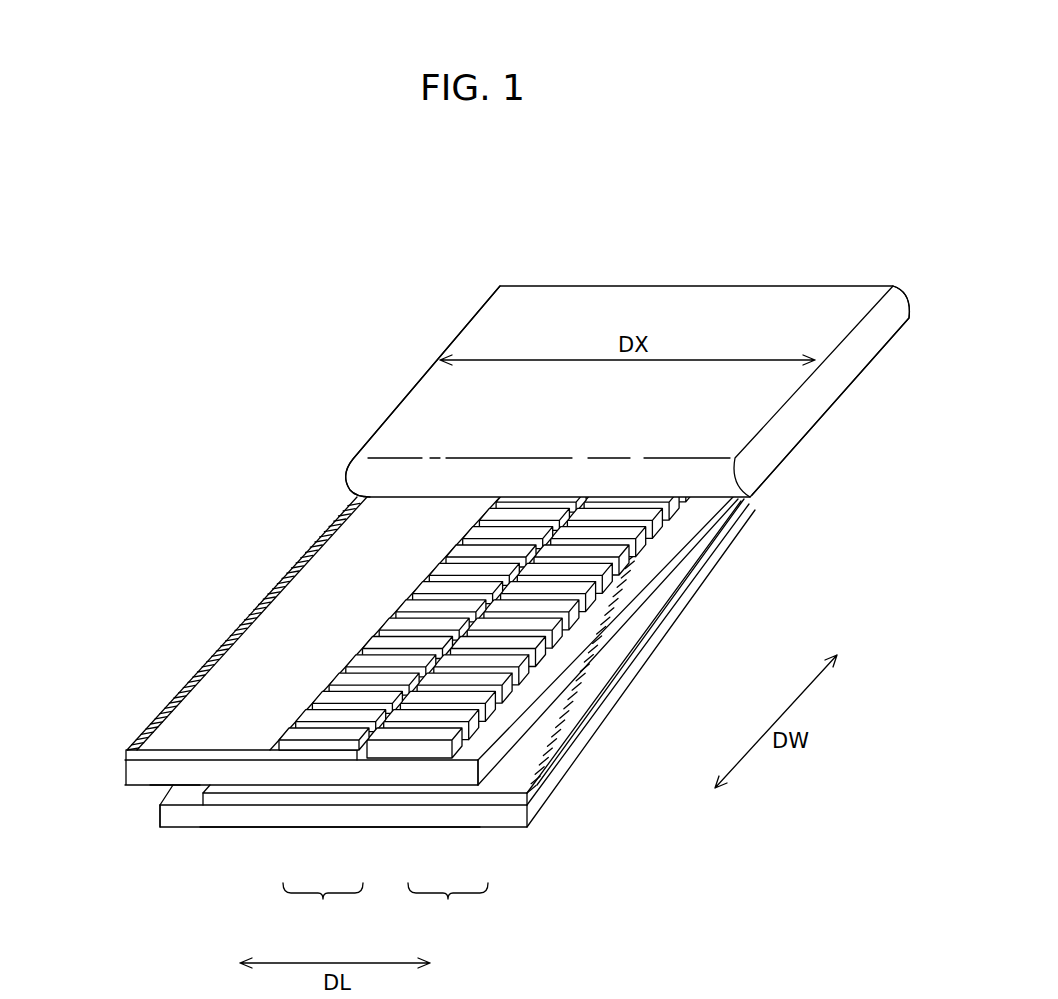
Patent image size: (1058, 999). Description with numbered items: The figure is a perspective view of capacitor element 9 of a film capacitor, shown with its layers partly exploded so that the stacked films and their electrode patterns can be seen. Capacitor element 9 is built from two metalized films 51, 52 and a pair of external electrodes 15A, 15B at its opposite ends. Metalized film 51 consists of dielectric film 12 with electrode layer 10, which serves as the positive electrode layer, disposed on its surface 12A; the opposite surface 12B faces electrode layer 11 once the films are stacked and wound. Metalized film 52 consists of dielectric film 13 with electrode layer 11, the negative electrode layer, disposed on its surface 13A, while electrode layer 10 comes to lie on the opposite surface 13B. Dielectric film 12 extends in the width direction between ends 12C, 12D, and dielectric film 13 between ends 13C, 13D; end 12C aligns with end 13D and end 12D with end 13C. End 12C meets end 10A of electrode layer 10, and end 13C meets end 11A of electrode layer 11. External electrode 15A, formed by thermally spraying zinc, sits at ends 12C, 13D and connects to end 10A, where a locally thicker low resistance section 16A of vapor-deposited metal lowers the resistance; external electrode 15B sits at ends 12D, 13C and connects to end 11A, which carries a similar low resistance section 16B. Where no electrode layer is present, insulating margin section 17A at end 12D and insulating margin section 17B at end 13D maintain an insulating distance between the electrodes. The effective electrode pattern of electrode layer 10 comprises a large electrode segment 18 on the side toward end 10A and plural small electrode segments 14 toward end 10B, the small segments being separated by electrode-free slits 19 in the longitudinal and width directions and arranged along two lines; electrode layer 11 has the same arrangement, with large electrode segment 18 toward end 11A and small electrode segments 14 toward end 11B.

The capacitor element 9 is at (398, 310).
The electrode layer 10 is at (287, 715).
The end of electrode layer 10A is at (127, 755).
The end of electrode layer 10B is at (520, 647).
The electrode layer 11 is at (337, 797).
The end of electrode layer 11A is at (530, 793).
The end of electrode layer 11B is at (213, 798).
The dielectric film 12 is at (458, 770).
The surface of dielectric film 12A is at (670, 540).
The surface of dielectric film 12B is at (707, 527).
The end of dielectric film 12C is at (125, 770).
The end of dielectric film 12D is at (622, 620).
The dielectric film 13 is at (290, 812).
The surface of dielectric film 13A is at (167, 785).
The surface of dielectric film 13B is at (237, 827).
The end of dielectric film 13C is at (558, 767).
The end of dielectric film 13D is at (160, 808).
The small electrode segments 14 is at (512, 705).
The external electrode 15A is at (420, 378).
The external electrode 15B is at (817, 397).
The low resistance section 16A is at (250, 617).
The low resistance section 16B is at (545, 772).
The insulating margin section 17A is at (565, 647).
The insulating margin section 17B is at (178, 797).
The large electrode segment 18 is at (385, 530).
The slits 19 is at (620, 538).
The metalized film 51 is at (448, 911).
The metalized film 52 is at (323, 911).